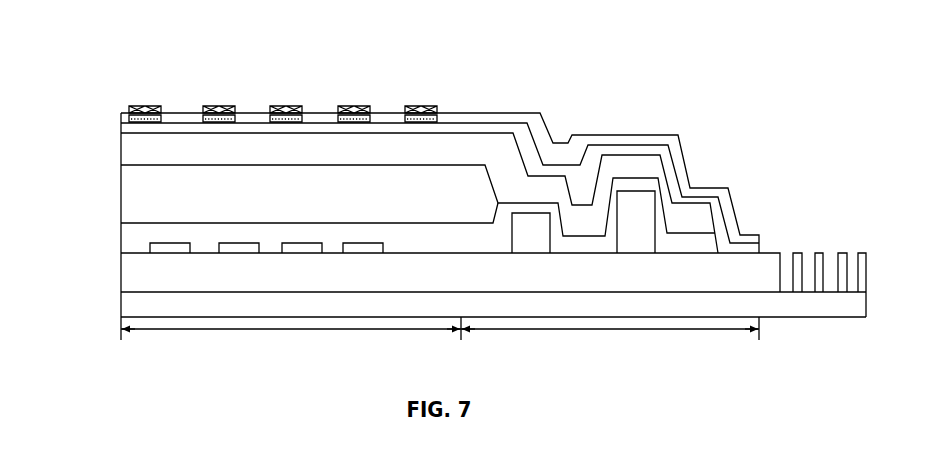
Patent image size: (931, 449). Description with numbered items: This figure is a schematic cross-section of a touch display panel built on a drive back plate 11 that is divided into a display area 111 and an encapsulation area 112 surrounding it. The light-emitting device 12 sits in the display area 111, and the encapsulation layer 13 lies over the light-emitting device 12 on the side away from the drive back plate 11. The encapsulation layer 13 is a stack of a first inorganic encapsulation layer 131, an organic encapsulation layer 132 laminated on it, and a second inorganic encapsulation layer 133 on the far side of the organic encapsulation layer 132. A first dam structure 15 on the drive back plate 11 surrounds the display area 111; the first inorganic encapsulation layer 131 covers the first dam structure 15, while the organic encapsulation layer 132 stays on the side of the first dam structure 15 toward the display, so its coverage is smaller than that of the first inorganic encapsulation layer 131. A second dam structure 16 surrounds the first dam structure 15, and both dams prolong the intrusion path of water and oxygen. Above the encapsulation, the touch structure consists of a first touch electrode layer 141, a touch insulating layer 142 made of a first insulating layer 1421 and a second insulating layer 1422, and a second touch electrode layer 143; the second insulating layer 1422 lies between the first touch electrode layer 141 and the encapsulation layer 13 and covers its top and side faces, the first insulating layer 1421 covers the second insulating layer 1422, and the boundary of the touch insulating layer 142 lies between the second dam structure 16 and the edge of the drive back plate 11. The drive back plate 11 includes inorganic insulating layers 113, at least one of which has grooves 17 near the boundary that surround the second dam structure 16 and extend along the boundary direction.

The drive back plate 11 is at (143, 305).
The display area 111 is at (291, 335).
The encapsulation area 112 is at (610, 336).
The inorganic insulating layers 113 is at (140, 275).
The light-emitting device 12 is at (173, 248).
The encapsulation layer 13 is at (374, 191).
The first inorganic encapsulation layer 131 is at (133, 237).
The organic encapsulation layer 132 is at (137, 190).
The second inorganic encapsulation layer 133 is at (67, 253).
The first touch electrode layer 141 is at (162, 118).
The touch insulating layer 142 is at (440, 136).
The first insulating layer 1421 is at (248, 117).
The second insulating layer 1422 is at (385, 128).
The second touch electrode layer 143 is at (302, 108).
The first dam structure 15 is at (528, 237).
The second dam structure 16 is at (641, 233).
The grooves 17 is at (828, 258).